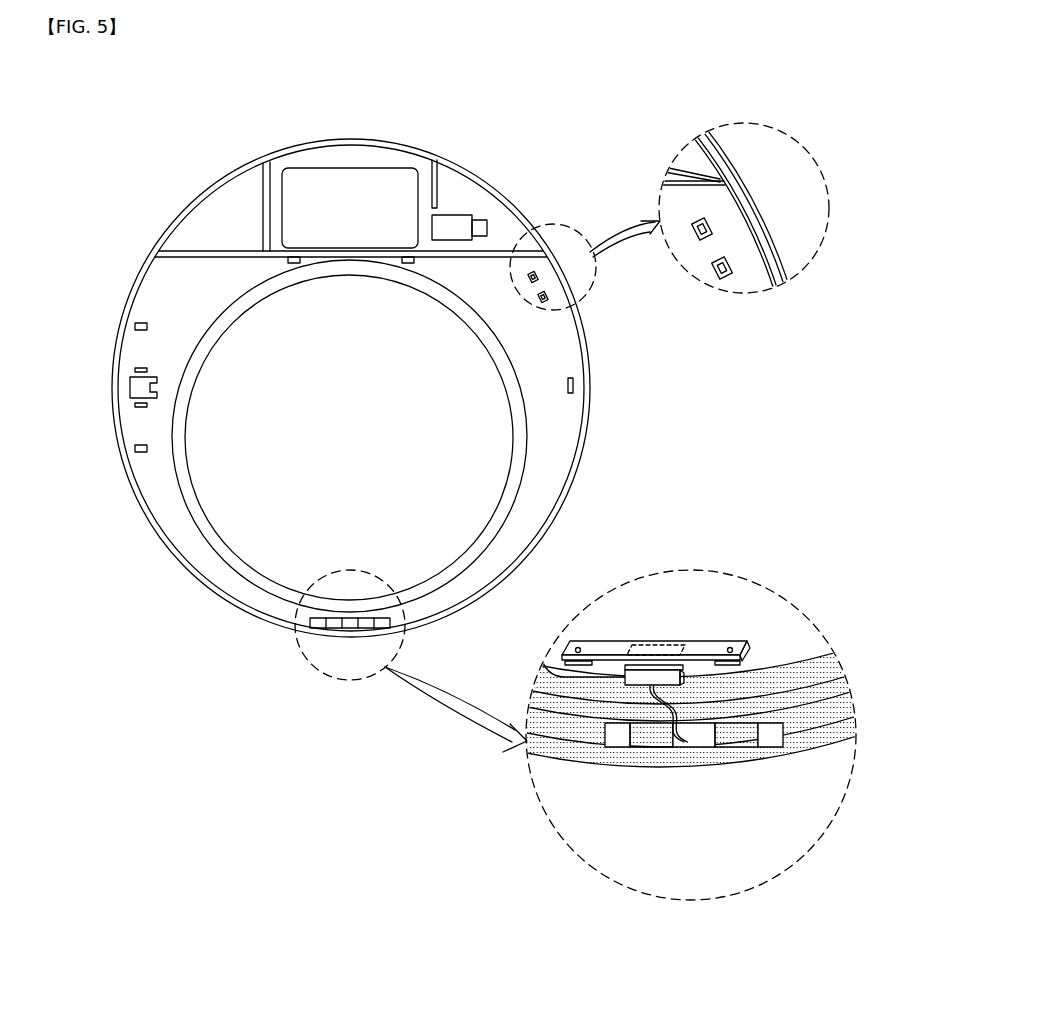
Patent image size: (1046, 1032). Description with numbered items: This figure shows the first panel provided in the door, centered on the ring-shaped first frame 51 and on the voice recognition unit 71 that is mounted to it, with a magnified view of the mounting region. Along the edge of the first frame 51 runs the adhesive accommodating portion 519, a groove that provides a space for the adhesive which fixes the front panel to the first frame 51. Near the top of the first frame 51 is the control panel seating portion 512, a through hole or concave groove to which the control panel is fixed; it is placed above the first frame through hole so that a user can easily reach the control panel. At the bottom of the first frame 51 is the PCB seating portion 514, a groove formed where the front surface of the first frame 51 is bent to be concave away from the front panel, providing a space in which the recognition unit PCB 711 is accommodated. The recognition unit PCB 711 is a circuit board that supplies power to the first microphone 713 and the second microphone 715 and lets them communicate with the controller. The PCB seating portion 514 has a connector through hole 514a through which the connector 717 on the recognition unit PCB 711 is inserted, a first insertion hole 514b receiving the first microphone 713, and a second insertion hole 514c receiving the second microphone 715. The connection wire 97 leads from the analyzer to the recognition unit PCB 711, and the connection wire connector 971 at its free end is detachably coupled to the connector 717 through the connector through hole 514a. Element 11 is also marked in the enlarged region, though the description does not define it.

The first frame 51 is at (133, 425).
The control panel seating portion 512 is at (383, 192).
The PCB seating portion 514 is at (328, 627).
The connector through hole 514a is at (667, 748).
The first insertion hole 514b is at (618, 738).
The second insertion hole 514c is at (772, 742).
The adhesive accommodating portion 519 is at (236, 252).
The voice recognition unit 71 is at (696, 599).
The recognition unit PCB 711 is at (707, 648).
The first microphone 713 is at (575, 675).
The second microphone 715 is at (762, 654).
The connector 717 is at (663, 640).
The connection wire 97 is at (830, 672).
The connection wire connector 971 is at (645, 683).
The lower band 11 is at (691, 736).